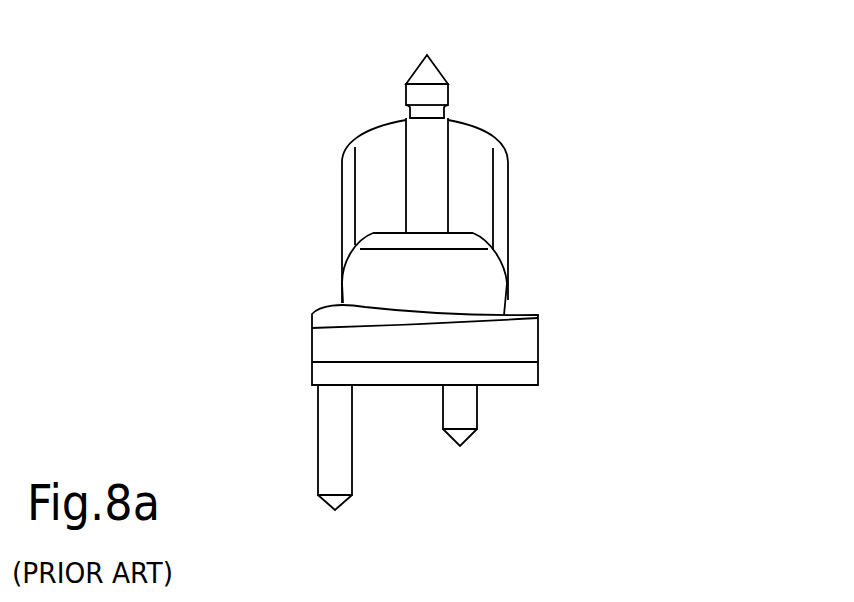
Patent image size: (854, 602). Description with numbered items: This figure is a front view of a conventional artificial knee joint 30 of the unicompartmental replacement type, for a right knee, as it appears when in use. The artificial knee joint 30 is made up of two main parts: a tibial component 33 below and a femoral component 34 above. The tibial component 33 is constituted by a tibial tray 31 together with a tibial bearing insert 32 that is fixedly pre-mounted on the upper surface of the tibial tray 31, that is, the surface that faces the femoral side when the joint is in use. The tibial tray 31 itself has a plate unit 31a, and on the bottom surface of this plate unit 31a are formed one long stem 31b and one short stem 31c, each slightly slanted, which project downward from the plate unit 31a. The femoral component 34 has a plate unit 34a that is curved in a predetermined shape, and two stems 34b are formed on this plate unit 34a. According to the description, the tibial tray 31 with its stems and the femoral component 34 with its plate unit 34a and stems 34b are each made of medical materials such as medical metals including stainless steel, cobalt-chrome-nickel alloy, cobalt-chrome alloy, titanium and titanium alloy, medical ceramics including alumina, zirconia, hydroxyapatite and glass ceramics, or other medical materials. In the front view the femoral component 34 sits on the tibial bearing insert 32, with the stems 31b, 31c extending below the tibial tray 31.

The artificial knee joint 30 is at (513, 115).
The tibial tray 31 is at (562, 367).
The plate unit 31a is at (322, 373).
The long stem 31b is at (328, 453).
The short stem 31c is at (463, 413).
The tibial bearing insert 32 is at (557, 307).
The tibial component 33 is at (650, 322).
The femoral component 34 is at (572, 102).
The plate unit 34a is at (360, 270).
The stems 34b is at (423, 148).